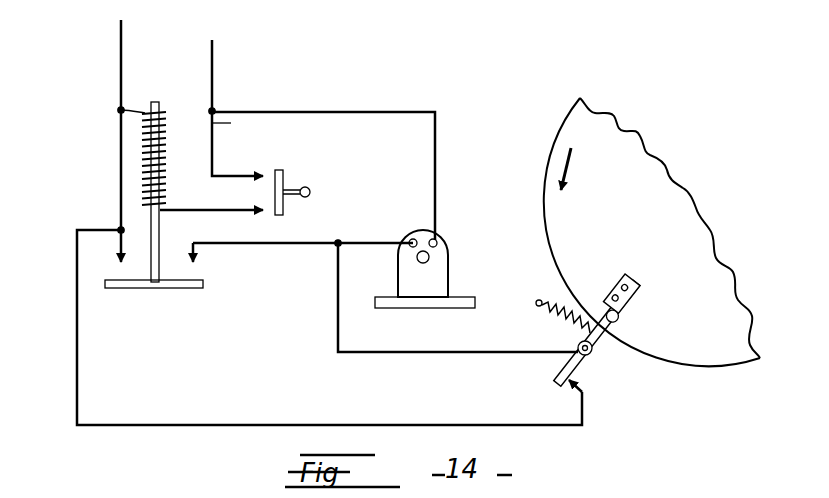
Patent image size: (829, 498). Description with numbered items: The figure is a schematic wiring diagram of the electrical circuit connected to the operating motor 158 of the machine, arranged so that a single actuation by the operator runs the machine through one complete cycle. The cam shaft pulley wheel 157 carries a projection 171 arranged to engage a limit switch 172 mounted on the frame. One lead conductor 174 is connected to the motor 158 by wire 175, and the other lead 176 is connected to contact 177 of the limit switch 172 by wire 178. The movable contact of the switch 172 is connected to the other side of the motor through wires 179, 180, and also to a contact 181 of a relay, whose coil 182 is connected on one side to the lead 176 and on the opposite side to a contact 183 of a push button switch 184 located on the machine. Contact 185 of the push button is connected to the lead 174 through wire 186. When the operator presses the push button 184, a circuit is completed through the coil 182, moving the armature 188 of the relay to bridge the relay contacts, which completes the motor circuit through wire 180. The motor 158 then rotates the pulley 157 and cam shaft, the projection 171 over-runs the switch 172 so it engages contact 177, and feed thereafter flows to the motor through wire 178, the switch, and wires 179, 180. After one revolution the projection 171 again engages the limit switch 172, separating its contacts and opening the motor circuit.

The cam shaft pulley wheel 157 is at (652, 232).
The motor 158 is at (425, 269).
The projection 171 is at (600, 300).
The limit switch 172 is at (578, 362).
The lead conductor 174 is at (213, 56).
The wire 175 is at (313, 112).
The lead 176 is at (121, 77).
The contact 177 is at (548, 399).
The wire 178 is at (220, 413).
The wire 179 is at (400, 352).
The wire 180 is at (315, 242).
The contact 181 is at (200, 262).
The coil 182 is at (165, 147).
The contact 183 is at (287, 192).
The push button switch 184 is at (350, 156).
The contact 185 is at (245, 172).
The wire 186 is at (239, 129).
The armature 188 is at (162, 289).